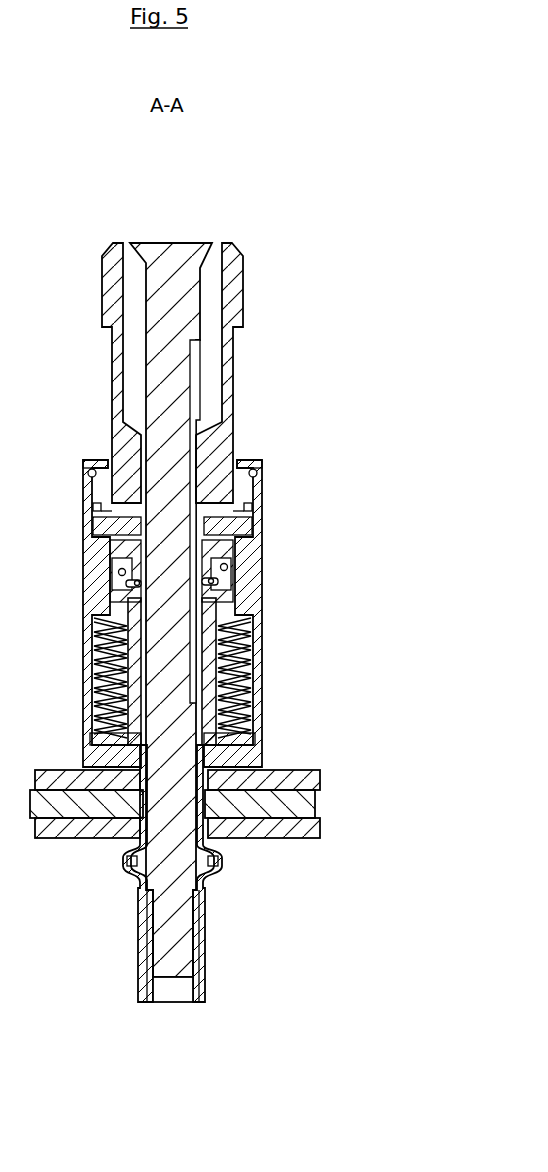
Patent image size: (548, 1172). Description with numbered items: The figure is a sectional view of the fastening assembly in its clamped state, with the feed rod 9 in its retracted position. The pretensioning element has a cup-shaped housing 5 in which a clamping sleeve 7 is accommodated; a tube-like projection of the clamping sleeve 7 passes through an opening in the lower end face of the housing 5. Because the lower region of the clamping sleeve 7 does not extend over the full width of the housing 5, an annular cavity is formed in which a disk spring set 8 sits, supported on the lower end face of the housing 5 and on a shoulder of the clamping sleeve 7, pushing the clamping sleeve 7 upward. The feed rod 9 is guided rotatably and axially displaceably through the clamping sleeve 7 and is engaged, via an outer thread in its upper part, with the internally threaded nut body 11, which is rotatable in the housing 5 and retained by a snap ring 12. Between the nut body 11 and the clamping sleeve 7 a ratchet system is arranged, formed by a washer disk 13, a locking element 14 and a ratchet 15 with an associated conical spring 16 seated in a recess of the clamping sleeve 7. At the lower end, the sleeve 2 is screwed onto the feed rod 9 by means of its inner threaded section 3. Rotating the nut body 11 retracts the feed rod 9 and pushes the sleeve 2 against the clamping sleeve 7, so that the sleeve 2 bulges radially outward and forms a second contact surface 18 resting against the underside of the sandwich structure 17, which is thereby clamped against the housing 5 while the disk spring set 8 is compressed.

The feed rod 9 is at (180, 257).
The nut body 11 is at (232, 296).
The snap ring 12 is at (264, 467).
The washer disk 13 is at (256, 505).
The locking element 14 is at (240, 527).
The ratchet 15 is at (216, 557).
The conical spring 16 is at (238, 581).
The clamping sleeve 7 is at (233, 604).
The disk spring set 8 is at (250, 645).
The housing 5 is at (260, 688).
The sandwich structure 17 is at (280, 802).
The second contact surface 18 is at (232, 864).
The inner threaded section 3 is at (150, 930).
The sleeve 2 is at (172, 990).